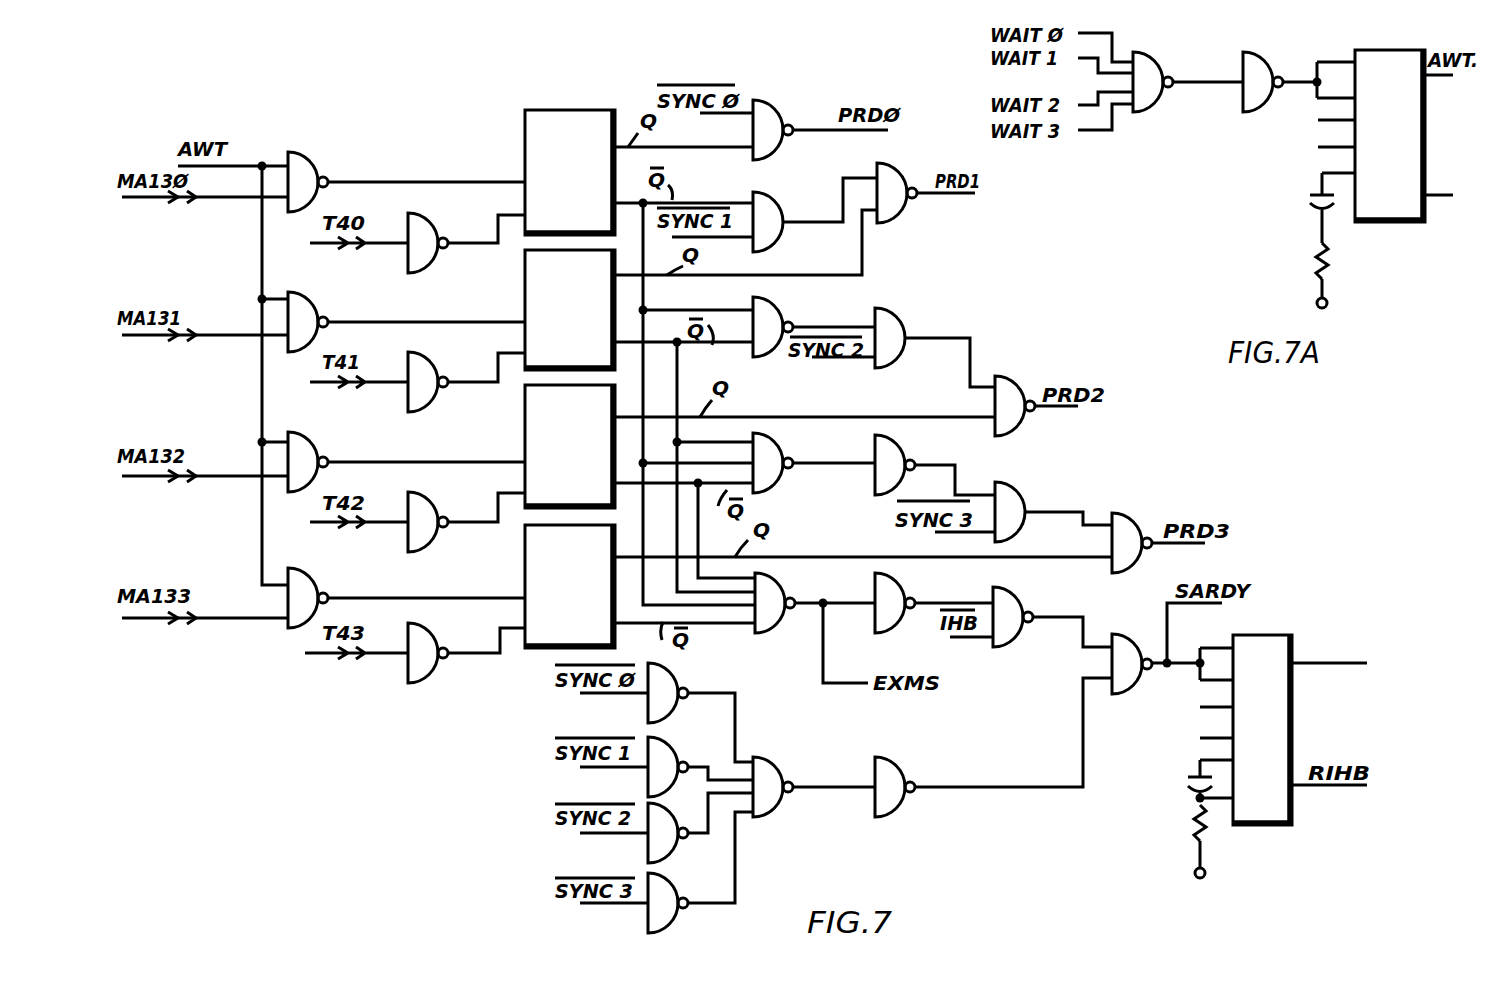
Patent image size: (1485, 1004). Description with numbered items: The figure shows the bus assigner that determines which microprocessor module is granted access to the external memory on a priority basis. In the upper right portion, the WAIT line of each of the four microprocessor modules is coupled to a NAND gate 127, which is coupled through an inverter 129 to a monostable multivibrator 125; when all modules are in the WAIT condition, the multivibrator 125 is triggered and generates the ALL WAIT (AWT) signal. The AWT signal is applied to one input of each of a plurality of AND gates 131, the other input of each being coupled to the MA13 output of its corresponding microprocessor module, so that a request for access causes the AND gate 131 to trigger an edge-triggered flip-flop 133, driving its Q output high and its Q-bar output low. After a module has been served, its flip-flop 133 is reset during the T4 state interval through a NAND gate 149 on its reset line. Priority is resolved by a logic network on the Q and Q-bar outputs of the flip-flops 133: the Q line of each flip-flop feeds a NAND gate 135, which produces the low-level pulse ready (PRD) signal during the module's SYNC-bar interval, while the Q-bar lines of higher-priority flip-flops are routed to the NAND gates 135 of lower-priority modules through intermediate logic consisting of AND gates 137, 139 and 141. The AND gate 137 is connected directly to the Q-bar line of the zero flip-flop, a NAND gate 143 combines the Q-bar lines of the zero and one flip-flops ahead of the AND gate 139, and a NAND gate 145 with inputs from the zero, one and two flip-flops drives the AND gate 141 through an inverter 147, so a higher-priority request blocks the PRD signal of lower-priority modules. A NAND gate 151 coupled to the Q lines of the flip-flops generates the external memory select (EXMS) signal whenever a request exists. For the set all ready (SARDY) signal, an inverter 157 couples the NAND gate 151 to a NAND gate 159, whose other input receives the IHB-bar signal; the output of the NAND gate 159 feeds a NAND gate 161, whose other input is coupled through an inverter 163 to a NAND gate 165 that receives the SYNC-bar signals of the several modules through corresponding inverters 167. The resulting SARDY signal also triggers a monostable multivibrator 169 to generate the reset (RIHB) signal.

In FIG. 7, the AND gate 131 is at (305, 170).
In FIG. 7, the NAND gate 149 is at (422, 252).
In FIG. 7, the edge-triggered flip-flop 133 is at (525, 123).
In FIG. 7, the NAND gate 135 is at (770, 117).
In FIG. 7, the AND gate 137 is at (768, 218).
In FIG. 7, the NAND gate 143 is at (772, 323).
In FIG. 7, the AND gate 139 is at (892, 330).
In FIG. 7, the NAND gate 145 is at (775, 467).
In FIG. 7, the inverter 147 is at (892, 460).
In FIG. 7, the AND gate 141 is at (1007, 500).
In FIG. 7, the NAND gate 151 is at (768, 620).
In FIG. 7, the inverter 157 is at (886, 592).
In FIG. 7, the NAND gate 159 is at (1007, 610).
In FIG. 7, the NAND gate 161 is at (1127, 653).
In FIG. 7, the monostable multivibrator 169 is at (1278, 647).
In FIG. 7, the inverter 163 is at (890, 797).
In FIG. 7, the NAND gate 165 is at (773, 778).
In FIG. 7, the inverter 167 is at (652, 712).
In FIG. 7A, the NAND gate 127 is at (1150, 75).
In FIG. 7A, the inverter 129 is at (1260, 73).
In FIG. 7A, the monostable multivibrator 125 is at (1385, 222).